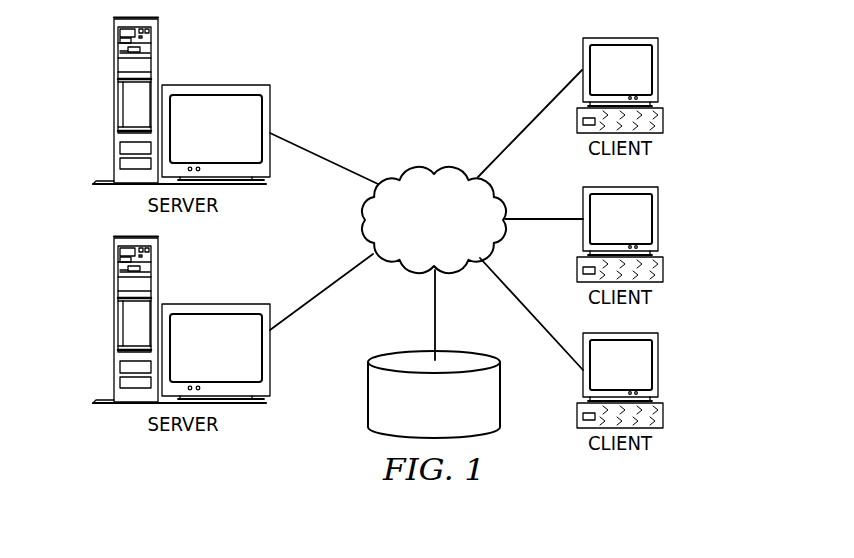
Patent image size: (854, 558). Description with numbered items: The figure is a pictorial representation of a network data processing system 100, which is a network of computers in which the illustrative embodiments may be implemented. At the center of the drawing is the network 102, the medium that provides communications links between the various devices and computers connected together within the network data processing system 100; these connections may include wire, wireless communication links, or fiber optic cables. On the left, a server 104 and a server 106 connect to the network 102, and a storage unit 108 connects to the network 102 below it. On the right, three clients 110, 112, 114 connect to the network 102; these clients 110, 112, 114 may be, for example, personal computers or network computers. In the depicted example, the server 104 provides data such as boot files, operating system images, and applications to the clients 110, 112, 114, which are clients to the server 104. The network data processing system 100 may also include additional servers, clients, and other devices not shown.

The network data processing system 100 is at (488, 58).
The network 102 is at (405, 168).
The server 104 is at (113, 102).
The server 106 is at (113, 321).
The storage unit 108 is at (368, 402).
The client 110 is at (660, 69).
The client 112 is at (660, 219).
The client 114 is at (660, 365).